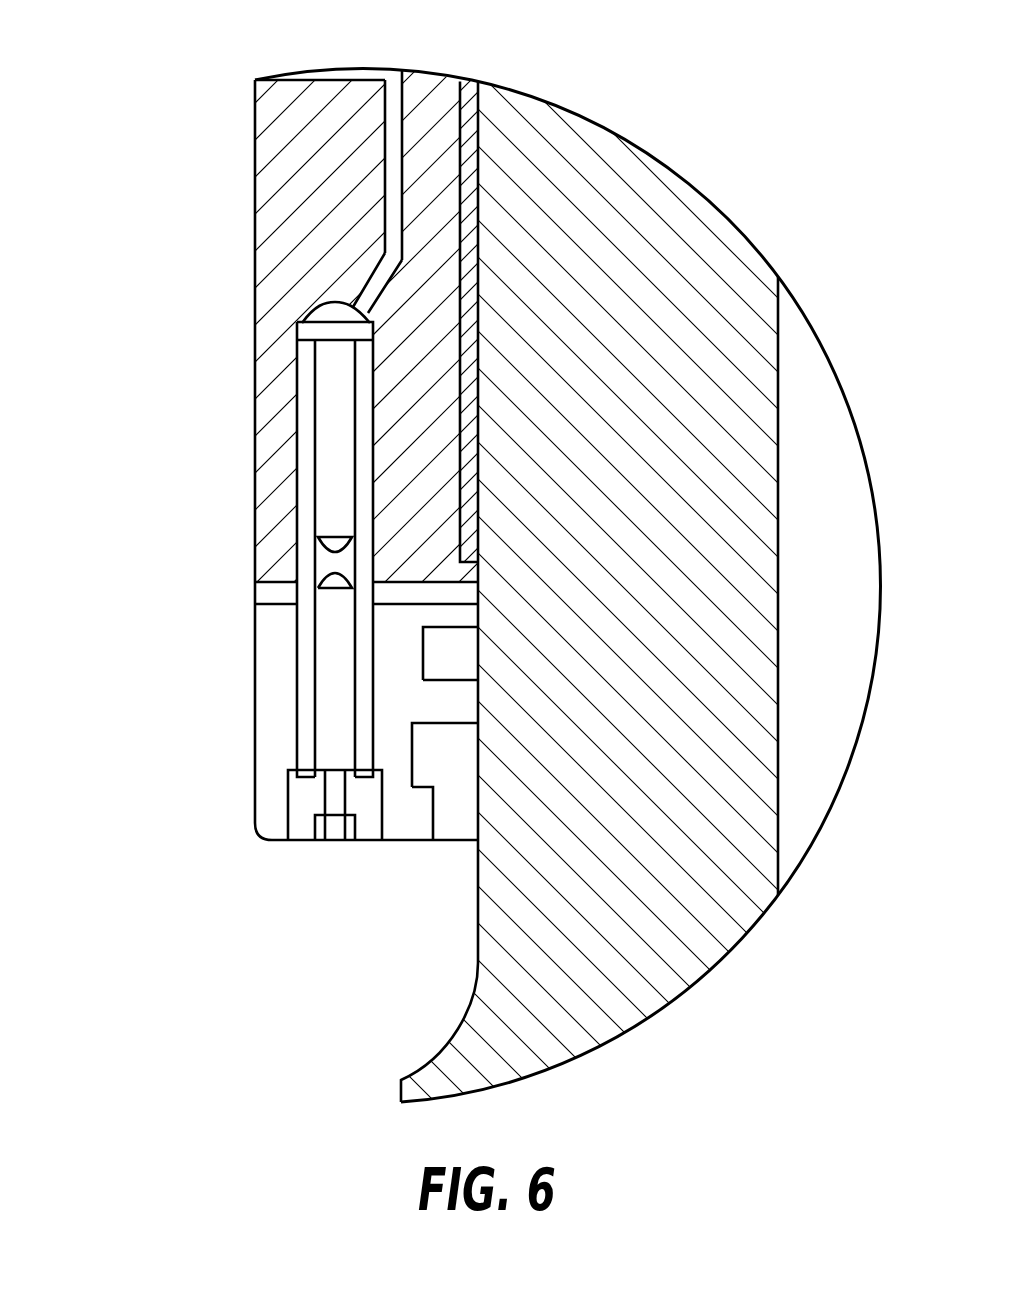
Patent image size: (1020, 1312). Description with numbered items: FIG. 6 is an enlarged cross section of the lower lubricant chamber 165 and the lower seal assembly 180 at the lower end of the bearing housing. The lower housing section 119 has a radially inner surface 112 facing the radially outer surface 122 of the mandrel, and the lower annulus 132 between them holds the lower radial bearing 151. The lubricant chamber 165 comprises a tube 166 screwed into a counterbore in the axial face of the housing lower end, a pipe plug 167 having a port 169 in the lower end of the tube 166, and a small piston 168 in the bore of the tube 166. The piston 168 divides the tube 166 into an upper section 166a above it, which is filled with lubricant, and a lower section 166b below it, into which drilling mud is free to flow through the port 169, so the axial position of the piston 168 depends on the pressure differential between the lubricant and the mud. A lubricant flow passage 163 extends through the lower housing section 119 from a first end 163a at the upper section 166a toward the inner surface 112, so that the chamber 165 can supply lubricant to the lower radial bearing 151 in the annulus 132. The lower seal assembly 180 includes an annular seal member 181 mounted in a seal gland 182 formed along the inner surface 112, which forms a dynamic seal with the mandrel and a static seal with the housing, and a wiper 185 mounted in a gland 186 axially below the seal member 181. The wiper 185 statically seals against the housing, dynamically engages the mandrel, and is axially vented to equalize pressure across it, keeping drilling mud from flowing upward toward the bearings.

The radially inner surface 112 is at (452, 102).
The lower housing section 119 is at (328, 218).
The radially outer surface 122 is at (490, 392).
The lower annulus 132 is at (478, 110).
The lower radial bearing 151 is at (473, 253).
The lubricant flow passage 163 is at (383, 176).
The first end 163a is at (365, 287).
The lower lubricant chamber 165 is at (338, 493).
The tube 166 is at (226, 553).
The upper section 166a is at (338, 391).
The lower section 166b is at (338, 647).
The pipe plug 167 is at (307, 818).
The small piston 168 is at (338, 563).
The port 169 is at (328, 793).
The lower seal assembly 180 is at (408, 872).
The annular seal member 181 is at (450, 653).
The seal gland 182 is at (458, 684).
The wiper 185 is at (452, 761).
The gland 186 is at (415, 755).